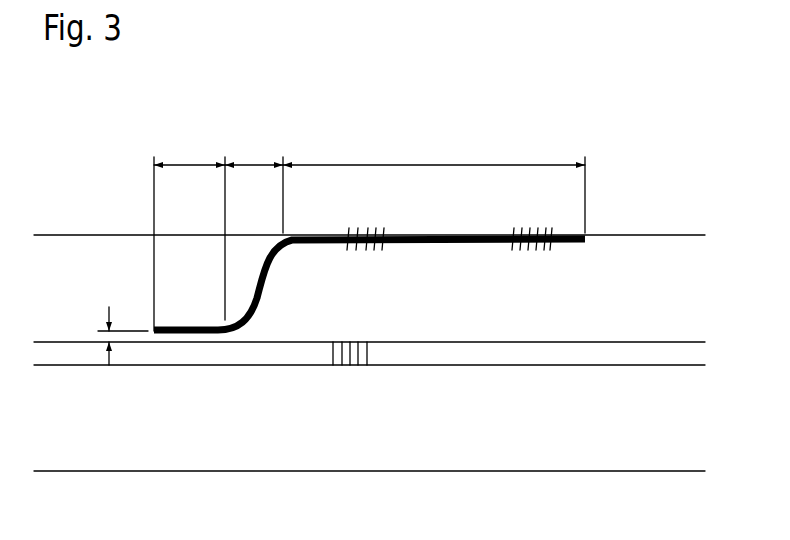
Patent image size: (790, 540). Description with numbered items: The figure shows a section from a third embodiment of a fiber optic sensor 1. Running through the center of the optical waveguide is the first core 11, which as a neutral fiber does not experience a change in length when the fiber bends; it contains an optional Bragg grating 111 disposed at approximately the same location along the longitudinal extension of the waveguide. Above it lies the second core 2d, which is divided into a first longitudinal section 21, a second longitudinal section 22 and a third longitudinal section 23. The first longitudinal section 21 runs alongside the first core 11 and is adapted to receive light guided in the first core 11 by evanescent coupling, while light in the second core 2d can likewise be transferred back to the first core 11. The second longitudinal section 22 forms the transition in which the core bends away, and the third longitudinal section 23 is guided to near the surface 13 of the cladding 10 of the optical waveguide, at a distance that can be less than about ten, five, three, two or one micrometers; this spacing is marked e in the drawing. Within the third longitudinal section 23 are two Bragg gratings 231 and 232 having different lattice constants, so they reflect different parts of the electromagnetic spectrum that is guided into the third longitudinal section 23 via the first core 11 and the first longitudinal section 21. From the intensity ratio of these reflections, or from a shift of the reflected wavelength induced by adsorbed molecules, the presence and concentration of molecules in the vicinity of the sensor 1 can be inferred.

The sensor 1 is at (93, 216).
The cladding 10 is at (523, 460).
The first core 11 is at (633, 357).
The Bragg grating 111 is at (345, 365).
The surface 13 is at (648, 233).
The second core 2d is at (262, 300).
The first longitudinal section 21 is at (189, 235).
The second longitudinal section 22 is at (254, 186).
The third longitudinal section 23 is at (434, 186).
The Bragg grating 231 is at (360, 247).
The Bragg grating 232 is at (525, 250).
The gap thickness e is at (120, 332).